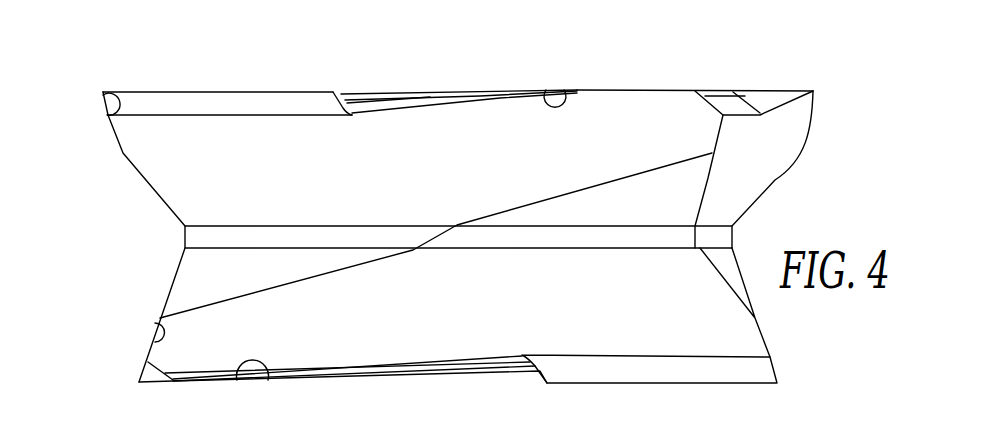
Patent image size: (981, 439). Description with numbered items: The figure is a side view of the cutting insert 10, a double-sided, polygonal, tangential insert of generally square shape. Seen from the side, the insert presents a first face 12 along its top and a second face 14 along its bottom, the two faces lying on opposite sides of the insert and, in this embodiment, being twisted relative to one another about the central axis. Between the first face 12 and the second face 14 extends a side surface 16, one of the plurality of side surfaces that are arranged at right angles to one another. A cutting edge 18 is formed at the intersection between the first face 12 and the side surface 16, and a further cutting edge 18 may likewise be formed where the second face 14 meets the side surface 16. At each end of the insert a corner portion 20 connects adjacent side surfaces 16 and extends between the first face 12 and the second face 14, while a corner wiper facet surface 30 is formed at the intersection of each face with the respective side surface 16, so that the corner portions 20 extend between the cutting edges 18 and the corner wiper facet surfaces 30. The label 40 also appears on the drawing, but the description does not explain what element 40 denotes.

The cutting insert 10 is at (92, 75).
The first face 12 is at (498, 98).
The second face 14 is at (464, 374).
The side surface 16 is at (628, 240).
The cutting edge 18 is at (563, 96).
The corner portion 20 is at (108, 115).
The corner wiper facet surface 30 is at (248, 107).
The rake face 40 is at (323, 6).